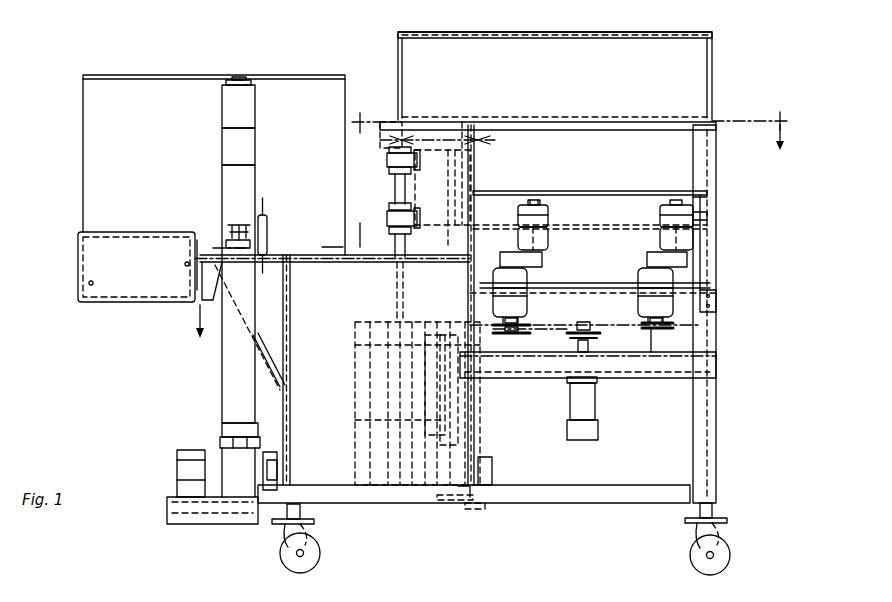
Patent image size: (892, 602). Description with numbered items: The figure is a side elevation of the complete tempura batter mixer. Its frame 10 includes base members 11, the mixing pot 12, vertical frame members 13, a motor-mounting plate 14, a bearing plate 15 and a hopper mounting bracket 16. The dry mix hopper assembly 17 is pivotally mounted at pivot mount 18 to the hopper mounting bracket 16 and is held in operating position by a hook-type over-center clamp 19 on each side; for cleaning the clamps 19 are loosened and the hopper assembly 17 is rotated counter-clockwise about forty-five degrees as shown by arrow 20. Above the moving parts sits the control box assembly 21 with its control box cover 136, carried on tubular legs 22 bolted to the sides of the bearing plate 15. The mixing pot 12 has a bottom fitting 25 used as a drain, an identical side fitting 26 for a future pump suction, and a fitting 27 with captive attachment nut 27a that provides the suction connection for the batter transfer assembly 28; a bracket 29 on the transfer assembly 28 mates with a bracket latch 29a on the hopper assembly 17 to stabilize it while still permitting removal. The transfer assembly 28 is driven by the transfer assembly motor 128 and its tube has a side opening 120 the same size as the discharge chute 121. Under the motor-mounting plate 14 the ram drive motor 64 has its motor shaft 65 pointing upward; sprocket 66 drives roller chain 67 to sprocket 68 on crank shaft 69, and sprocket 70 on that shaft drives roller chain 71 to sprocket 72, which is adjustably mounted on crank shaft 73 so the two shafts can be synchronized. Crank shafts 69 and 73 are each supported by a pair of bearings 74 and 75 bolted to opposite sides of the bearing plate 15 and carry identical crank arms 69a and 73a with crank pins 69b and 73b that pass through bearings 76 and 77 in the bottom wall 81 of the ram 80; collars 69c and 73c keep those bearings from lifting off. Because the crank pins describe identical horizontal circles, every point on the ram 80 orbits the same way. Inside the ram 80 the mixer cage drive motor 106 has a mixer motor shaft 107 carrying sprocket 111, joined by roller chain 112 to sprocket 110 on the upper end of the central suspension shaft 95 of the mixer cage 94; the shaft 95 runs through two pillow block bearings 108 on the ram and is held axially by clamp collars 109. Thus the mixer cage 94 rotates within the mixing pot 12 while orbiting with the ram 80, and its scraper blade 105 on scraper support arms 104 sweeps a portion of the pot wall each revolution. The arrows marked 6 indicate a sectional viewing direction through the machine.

The section line 6 is at (486, 231).
The frame 10 is at (630, 512).
The base members 11 is at (552, 506).
The mixing pot 12 is at (470, 447).
The vertical frame members 13 is at (718, 465).
The motor-mounting plate 14 is at (703, 358).
The bearing plate 15 is at (612, 290).
The hopper mounting bracket 16 is at (262, 365).
The dry mix hopper assembly 17 is at (206, 58).
The pivot mount 18 is at (190, 303).
The hook-type over-center clamp 19 is at (267, 210).
The arrow 20 is at (50, 105).
The control box assembly 21 is at (712, 90).
The tubular legs 22 is at (716, 296).
The bottom fitting 25 is at (477, 507).
The side fitting 26 is at (480, 482).
The fitting 27 is at (283, 470).
The captive attachment nut 27a is at (282, 445).
The batter transfer assembly 28 is at (216, 399).
The bracket 29 is at (224, 243).
The bracket latch 29a is at (238, 224).
The ram drive motor 64 is at (597, 411).
The motor shaft 65 is at (595, 341).
The roller chain sprocket 66 is at (607, 340).
The roller chain 67 is at (555, 342).
The sprocket 68 is at (527, 336).
The crank shaft 69 is at (530, 342).
The crank arm 69a is at (542, 260).
The crank pin 69b is at (528, 203).
The collar 69c is at (541, 205).
The sprocket 70 is at (487, 336).
The roller chain 71 is at (551, 328).
The sprocket 72 is at (700, 327).
The crank shaft 73 is at (657, 334).
The crank arm 73a is at (687, 260).
The crank pin 73b is at (708, 216).
The collar 73c is at (708, 197).
The bearing 74 is at (500, 276).
The bearing 75 is at (535, 292).
The bearing 76 is at (548, 241).
The bearing 77 is at (548, 212).
The ram 80 is at (700, 194).
The bottom wall 81 is at (590, 210).
The mixer cage 94 is at (372, 316).
The central suspension shaft 95 is at (406, 246).
The scraper support arms 104 is at (432, 482).
The scraper blade 105 is at (420, 462).
The mixer cage drive motor 106 is at (438, 135).
The mixer motor shaft 107 is at (482, 135).
The pillow block bearings 108 is at (389, 152).
The clamp collars 109 is at (395, 184).
The sprocket 110 is at (392, 122).
The sprocket 111 is at (465, 120).
The roller chain 112 is at (455, 150).
The side opening 120 is at (246, 147).
The discharge chute 121 is at (252, 108).
The transfer assembly motor 128 is at (177, 462).
The control box cover 136 is at (688, 30).